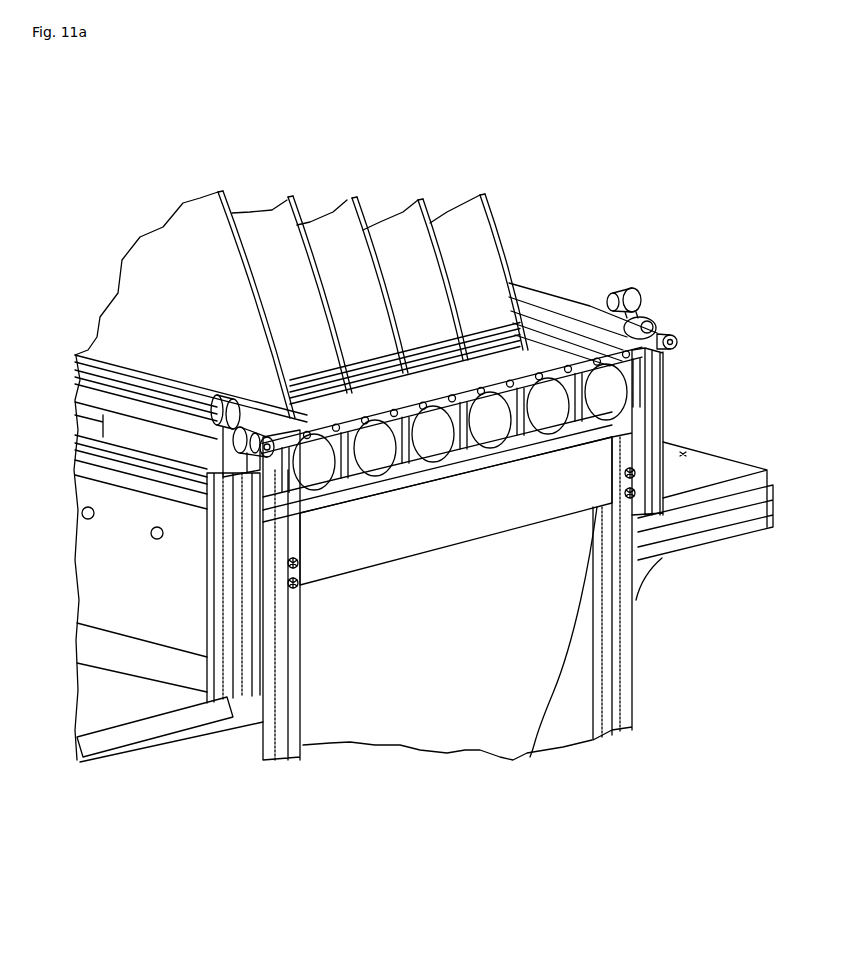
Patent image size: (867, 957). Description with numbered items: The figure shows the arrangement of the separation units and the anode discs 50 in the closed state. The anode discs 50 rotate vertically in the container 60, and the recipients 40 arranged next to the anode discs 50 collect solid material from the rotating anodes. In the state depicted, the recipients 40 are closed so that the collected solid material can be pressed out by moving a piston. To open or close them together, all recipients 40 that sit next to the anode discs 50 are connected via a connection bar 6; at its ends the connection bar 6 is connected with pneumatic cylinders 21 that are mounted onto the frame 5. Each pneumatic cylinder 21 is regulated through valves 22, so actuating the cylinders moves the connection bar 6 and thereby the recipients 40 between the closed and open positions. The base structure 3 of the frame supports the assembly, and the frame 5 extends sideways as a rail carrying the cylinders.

The base frame beam 3 is at (113, 717).
The frame 5 is at (666, 403).
The connection bar 6 is at (659, 347).
The pneumatic cylinder 21 is at (566, 301).
The valve 22 is at (94, 394).
The recipient 40 is at (325, 471).
The anode disc 50 is at (483, 213).
The container 60 is at (530, 707).